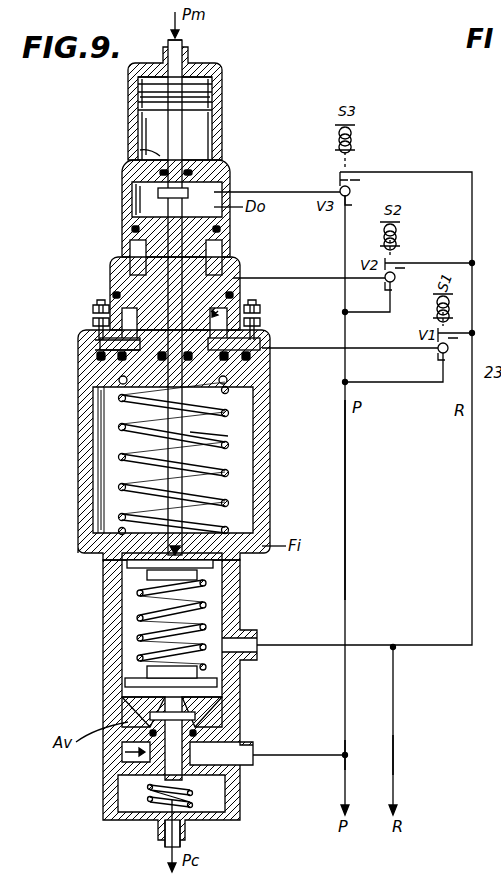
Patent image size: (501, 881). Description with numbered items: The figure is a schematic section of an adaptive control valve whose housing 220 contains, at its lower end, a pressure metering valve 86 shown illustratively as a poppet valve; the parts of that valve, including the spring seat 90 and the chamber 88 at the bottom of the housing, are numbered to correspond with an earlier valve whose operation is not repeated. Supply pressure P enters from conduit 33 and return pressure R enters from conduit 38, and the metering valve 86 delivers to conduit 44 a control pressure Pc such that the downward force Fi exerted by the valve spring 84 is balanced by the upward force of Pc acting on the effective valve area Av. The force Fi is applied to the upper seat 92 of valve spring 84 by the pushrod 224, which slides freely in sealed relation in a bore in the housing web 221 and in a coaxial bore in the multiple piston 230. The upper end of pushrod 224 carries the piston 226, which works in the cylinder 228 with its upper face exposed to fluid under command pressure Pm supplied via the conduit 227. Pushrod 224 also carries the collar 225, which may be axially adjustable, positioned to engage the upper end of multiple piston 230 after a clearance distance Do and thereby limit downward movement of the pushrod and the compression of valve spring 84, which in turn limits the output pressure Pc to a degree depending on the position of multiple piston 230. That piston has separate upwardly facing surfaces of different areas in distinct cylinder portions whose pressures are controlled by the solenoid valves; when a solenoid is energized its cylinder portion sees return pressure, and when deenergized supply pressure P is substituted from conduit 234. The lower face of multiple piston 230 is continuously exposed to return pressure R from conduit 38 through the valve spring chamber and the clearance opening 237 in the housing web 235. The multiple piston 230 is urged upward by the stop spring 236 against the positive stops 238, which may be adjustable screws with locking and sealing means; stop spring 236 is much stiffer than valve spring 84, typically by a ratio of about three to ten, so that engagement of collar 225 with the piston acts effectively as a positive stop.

The housing 220 is at (125, 139).
The housing web 221 is at (140, 152).
The pushrod 224 is at (228, 430).
The collar 225 is at (190, 190).
The piston 226 is at (213, 92).
The conduit 227 is at (184, 47).
The cylinder 228 is at (210, 126).
The multiple piston 230 is at (230, 315).
The conduit 234 is at (345, 486).
The housing web 235 is at (95, 537).
The stop spring 236 is at (228, 474).
The clearance opening 237 is at (118, 520).
The positive stops 238 is at (96, 352).
The upper seat 92 is at (130, 565).
The valve spring 84 is at (140, 638).
The spring seat / port 90 is at (200, 672).
The valve 86 is at (124, 752).
The return spring chamber 88 is at (135, 800).
The conduit 44 is at (170, 854).
The conduit 33 is at (356, 772).
The conduit 38 is at (396, 755).